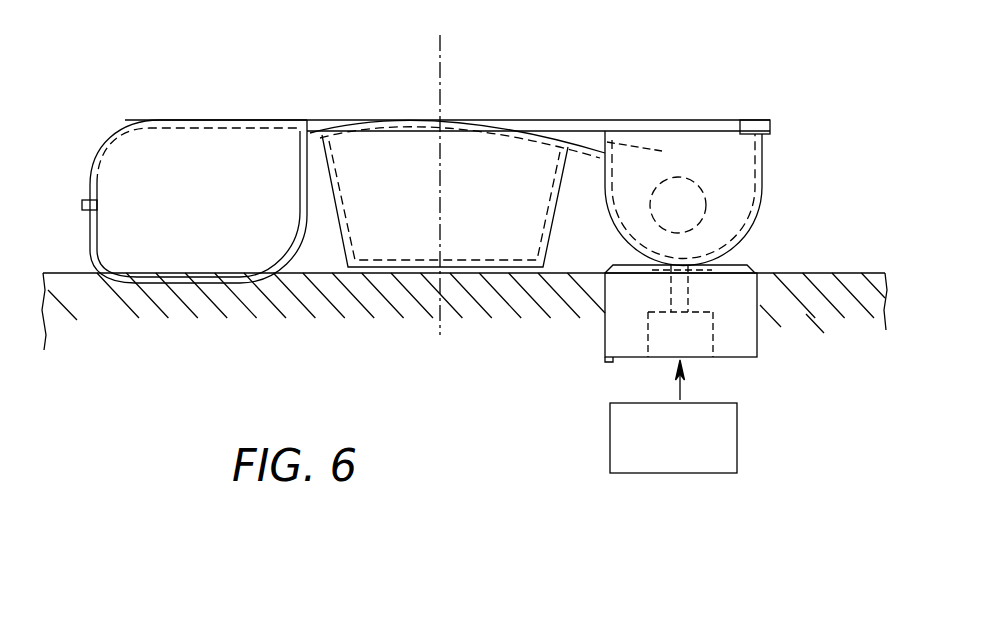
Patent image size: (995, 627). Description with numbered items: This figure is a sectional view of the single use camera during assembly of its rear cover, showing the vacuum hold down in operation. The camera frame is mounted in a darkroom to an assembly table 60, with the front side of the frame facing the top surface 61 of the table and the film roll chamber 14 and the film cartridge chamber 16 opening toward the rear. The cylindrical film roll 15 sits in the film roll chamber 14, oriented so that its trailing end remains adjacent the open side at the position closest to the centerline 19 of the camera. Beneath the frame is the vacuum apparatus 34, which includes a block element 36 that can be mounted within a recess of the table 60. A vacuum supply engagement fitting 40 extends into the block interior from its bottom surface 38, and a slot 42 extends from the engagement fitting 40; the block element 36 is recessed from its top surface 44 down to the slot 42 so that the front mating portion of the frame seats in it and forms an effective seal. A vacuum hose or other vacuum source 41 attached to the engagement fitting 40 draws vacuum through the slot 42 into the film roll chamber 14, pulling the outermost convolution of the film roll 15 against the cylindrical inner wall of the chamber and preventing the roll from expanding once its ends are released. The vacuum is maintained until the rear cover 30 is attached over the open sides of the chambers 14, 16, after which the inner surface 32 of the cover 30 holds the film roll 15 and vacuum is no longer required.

The film roll chamber 14 is at (738, 158).
The film roll 15 is at (723, 213).
The film cartridge chamber 16 is at (157, 170).
The centerline 19 is at (438, 62).
The rear cover 30 is at (624, 120).
The inner surface 32 is at (742, 121).
The vacuum apparatus 34 is at (577, 377).
The block element 36 is at (747, 337).
The bottom surface 38 is at (608, 362).
The vacuum supply engagement fitting 40 is at (692, 347).
The vacuum source 41 is at (737, 437).
The slot 42 is at (683, 295).
The top surface 44 is at (740, 257).
The assembly table 60 is at (260, 343).
The top surface of the table 61 is at (57, 272).